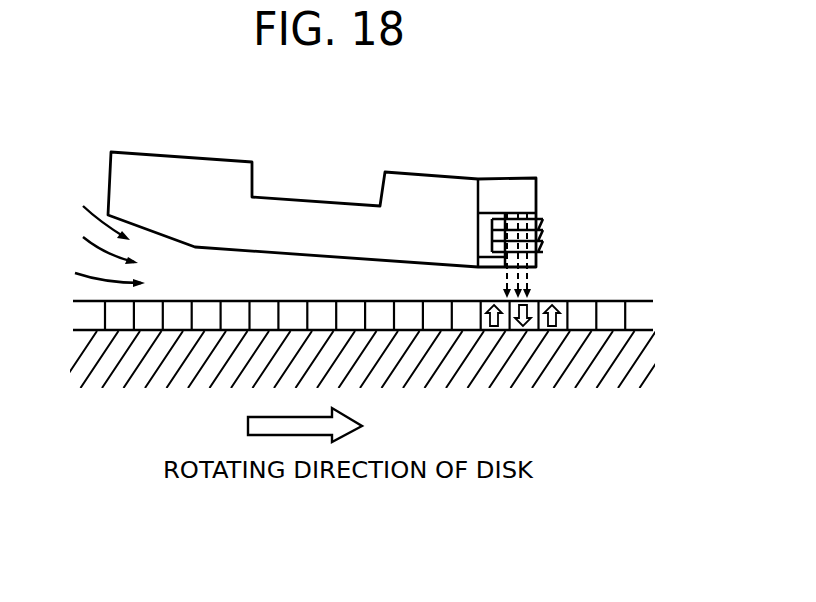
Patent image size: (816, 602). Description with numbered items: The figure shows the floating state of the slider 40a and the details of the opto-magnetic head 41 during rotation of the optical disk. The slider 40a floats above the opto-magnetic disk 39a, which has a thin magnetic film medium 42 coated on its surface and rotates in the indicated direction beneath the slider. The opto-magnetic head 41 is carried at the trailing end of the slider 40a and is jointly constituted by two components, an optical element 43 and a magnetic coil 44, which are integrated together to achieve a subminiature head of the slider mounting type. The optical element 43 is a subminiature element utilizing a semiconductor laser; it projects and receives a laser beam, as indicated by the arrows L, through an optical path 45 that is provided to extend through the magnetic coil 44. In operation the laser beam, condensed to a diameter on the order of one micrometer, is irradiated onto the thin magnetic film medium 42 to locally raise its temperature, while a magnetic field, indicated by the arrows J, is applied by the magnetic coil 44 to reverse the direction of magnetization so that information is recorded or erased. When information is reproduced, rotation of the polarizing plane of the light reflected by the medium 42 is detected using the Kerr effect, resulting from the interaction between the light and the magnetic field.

The slider 40a is at (215, 158).
The opto-magnetic head 41 is at (576, 215).
The optical element 43 is at (537, 193).
The magnetic coil 44 is at (539, 231).
The optical path 45 is at (547, 262).
The thin magnetic film medium 42 is at (608, 300).
The opto-magnetic disk 39a is at (637, 368).
The arrows indicating laser beam projection and reception L is at (537, 282).
The arrows indicating applied magnetic field J is at (537, 288).